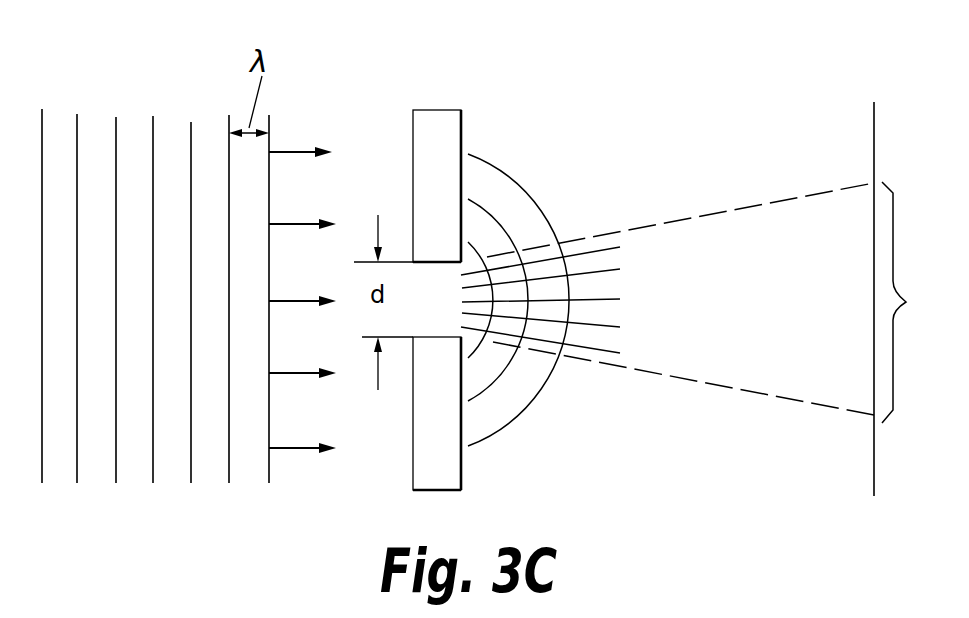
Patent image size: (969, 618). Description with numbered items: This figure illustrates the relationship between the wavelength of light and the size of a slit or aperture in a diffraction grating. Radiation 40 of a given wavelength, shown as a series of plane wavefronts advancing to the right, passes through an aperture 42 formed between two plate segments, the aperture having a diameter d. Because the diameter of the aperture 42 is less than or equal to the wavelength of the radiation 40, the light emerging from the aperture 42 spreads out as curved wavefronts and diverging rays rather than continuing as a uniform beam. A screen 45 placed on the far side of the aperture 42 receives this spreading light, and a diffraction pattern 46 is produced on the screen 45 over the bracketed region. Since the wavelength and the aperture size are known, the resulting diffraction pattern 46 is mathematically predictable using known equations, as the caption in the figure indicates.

The radiation 40 is at (168, 104).
The aperture 42 is at (420, 262).
The screen 45 is at (874, 447).
The diffraction pattern 46 is at (903, 305).